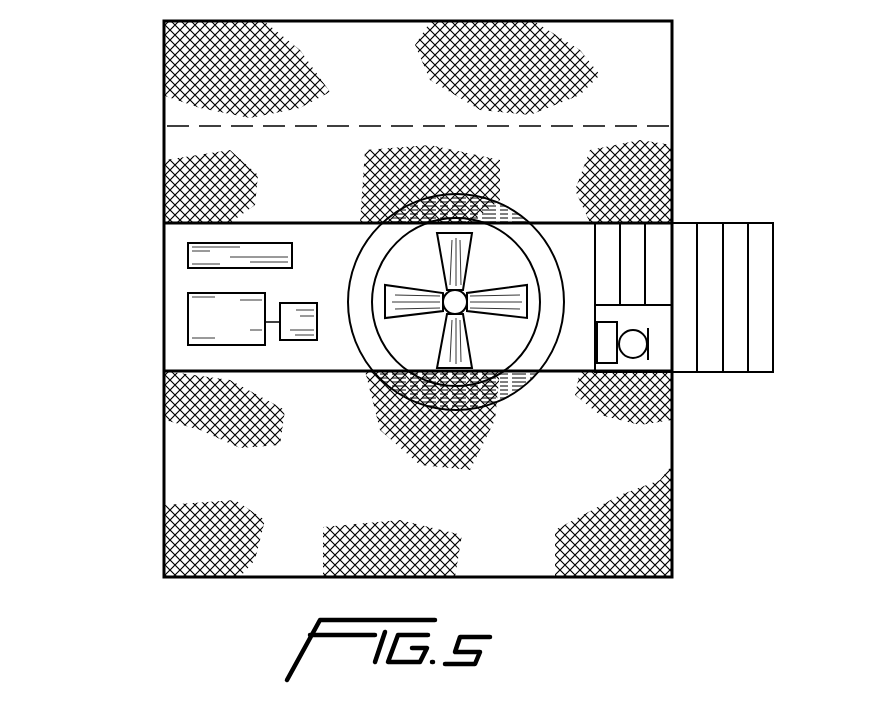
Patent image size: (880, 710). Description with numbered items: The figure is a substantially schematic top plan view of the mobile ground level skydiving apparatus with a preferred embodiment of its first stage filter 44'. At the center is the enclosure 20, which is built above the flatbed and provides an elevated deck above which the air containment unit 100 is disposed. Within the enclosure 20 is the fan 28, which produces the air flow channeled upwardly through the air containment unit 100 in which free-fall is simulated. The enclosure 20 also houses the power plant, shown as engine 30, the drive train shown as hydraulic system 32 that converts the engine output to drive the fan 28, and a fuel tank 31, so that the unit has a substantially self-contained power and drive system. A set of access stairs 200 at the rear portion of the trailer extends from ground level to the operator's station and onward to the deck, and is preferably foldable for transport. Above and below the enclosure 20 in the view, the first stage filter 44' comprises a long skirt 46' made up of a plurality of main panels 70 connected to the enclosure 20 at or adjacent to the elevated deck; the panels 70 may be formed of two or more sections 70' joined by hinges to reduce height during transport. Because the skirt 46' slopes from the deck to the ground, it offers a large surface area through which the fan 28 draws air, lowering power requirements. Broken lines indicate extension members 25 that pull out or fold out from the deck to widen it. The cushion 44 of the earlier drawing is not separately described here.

The enclosure 20 is at (164, 316).
The extension members 25 is at (375, 222).
The fan 28 is at (510, 292).
The engine 30 is at (244, 333).
The fuel tank 31 is at (188, 257).
The hydraulic system 32 is at (297, 322).
The cushion 44 is at (346, 299).
The first stage filter 44' is at (346, 109).
The skirt 46' is at (192, 299).
The main panels 70 is at (555, 331).
The sections 70' is at (606, 122).
The air containment unit 100 is at (360, 312).
The access stairs 200 is at (710, 232).